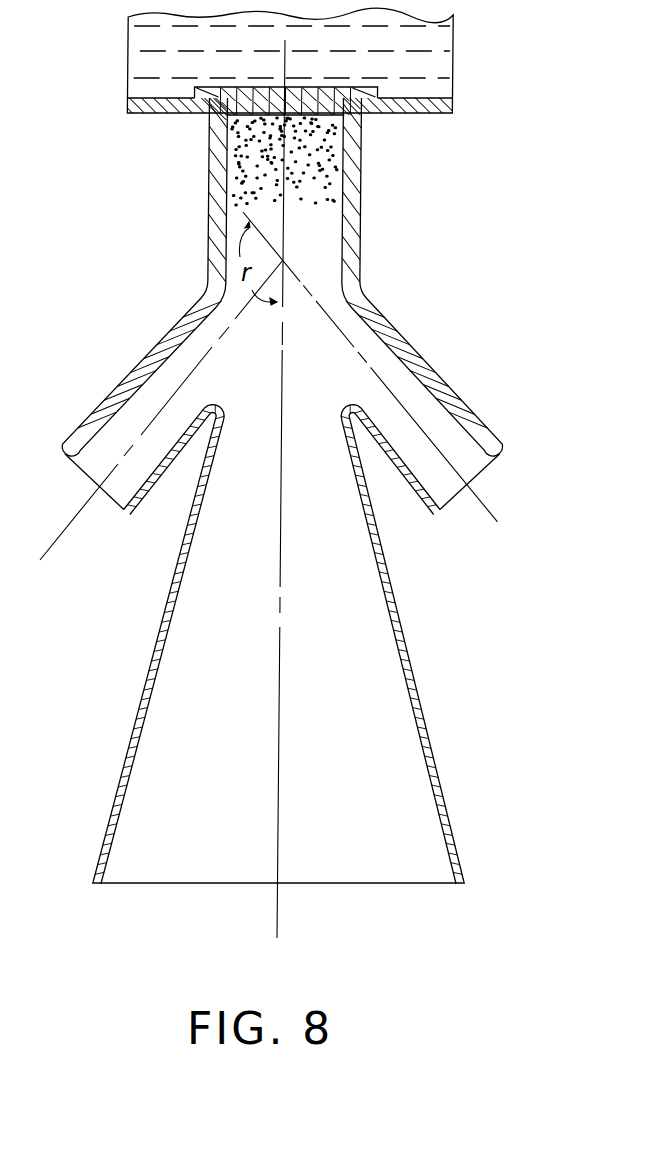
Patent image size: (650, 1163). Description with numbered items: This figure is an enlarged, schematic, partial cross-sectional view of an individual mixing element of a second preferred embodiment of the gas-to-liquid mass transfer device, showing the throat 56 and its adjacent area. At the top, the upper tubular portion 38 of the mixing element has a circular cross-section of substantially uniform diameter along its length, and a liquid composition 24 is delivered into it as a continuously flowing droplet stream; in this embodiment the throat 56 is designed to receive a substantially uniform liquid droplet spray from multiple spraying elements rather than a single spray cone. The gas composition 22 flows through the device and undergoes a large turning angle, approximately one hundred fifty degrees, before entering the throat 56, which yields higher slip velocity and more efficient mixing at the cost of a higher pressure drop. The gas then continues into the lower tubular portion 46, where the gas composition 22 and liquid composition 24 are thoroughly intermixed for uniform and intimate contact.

The liquid composition 24 is at (402, 39).
The upper tubular portion 38 is at (353, 185).
The gas composition 22 is at (117, 483).
The lower tubular portion 46 is at (428, 748).
The throat 56 is at (308, 415).